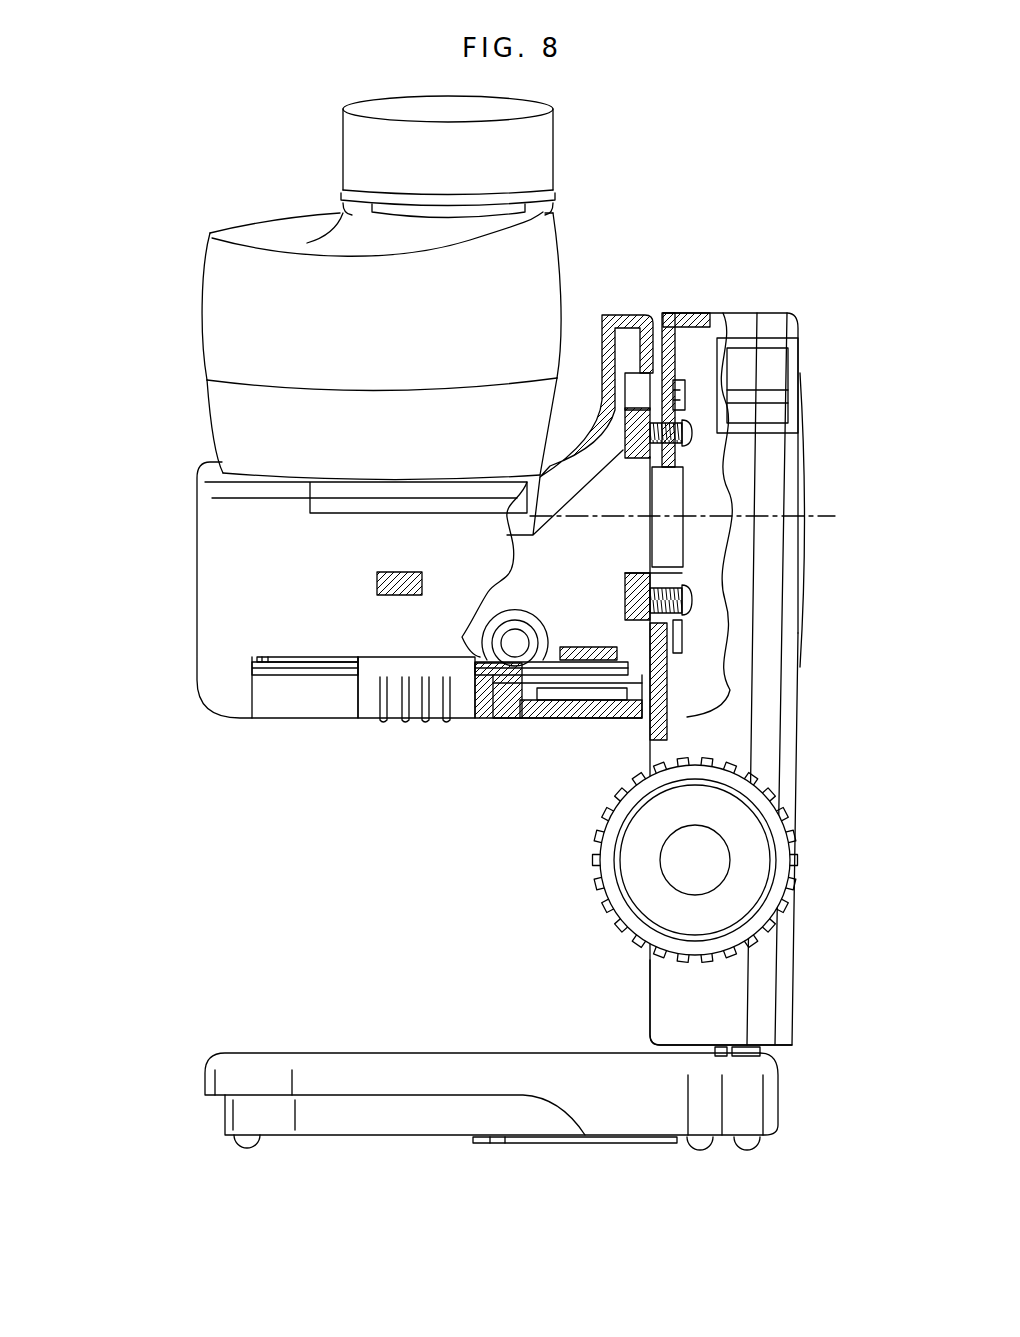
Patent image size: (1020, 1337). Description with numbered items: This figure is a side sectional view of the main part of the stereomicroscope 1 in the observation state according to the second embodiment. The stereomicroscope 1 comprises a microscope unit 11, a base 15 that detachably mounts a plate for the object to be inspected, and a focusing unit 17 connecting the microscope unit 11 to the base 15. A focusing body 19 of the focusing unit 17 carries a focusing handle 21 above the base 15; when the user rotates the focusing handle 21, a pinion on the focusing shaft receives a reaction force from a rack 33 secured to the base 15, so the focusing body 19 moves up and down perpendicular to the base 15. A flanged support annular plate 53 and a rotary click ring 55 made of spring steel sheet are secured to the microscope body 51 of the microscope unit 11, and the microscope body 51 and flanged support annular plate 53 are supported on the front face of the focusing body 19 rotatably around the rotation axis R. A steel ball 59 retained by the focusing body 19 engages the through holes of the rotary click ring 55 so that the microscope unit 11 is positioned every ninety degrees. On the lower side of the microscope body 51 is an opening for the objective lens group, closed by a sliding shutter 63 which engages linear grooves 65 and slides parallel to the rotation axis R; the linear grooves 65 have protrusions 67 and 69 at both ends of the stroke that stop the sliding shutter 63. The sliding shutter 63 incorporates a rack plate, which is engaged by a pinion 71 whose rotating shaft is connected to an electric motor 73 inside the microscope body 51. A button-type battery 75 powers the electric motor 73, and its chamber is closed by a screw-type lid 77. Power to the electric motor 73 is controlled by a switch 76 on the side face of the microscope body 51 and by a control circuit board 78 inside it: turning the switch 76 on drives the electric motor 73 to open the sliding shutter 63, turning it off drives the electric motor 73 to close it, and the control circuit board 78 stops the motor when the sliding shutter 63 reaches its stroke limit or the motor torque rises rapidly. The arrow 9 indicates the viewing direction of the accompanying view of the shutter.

The stereomicroscope 1 is at (769, 228).
The microscope unit 11 is at (165, 433).
The microscope body 51 is at (215, 597).
The protrusion 67 is at (267, 678).
The linear grooves 65 is at (322, 677).
The sliding shutter 63 is at (417, 718).
The electric motor 73 is at (482, 672).
The pinion 71 is at (497, 652).
The protrusion 69 is at (548, 668).
The button-type battery 75 is at (580, 695).
The lid 77 is at (603, 705).
The control circuit board 78 is at (584, 645).
The switch 76 is at (377, 582).
The focusing unit 17 is at (836, 750).
The rotary click ring 55 is at (680, 640).
The rotation axis R is at (780, 508).
The steel ball 59 is at (688, 393).
The flanged support annular plate 53 is at (668, 577).
The focusing handle 21 is at (748, 883).
The focusing body 19 is at (658, 990).
The rack 33 is at (753, 1050).
The base 15 is at (268, 1047).
The arrow 9 is at (423, 862).